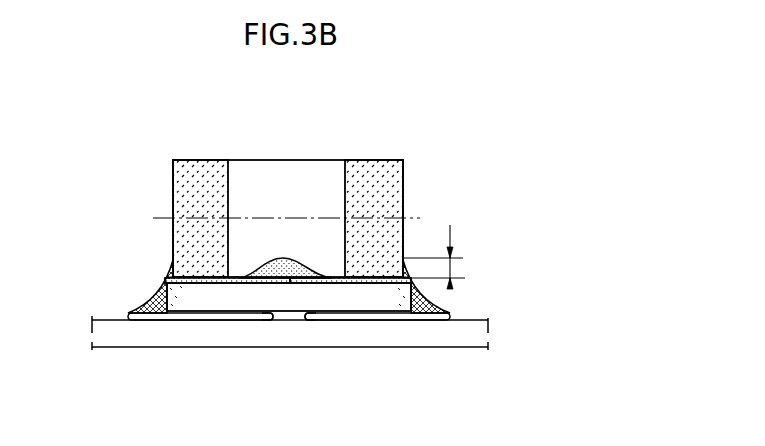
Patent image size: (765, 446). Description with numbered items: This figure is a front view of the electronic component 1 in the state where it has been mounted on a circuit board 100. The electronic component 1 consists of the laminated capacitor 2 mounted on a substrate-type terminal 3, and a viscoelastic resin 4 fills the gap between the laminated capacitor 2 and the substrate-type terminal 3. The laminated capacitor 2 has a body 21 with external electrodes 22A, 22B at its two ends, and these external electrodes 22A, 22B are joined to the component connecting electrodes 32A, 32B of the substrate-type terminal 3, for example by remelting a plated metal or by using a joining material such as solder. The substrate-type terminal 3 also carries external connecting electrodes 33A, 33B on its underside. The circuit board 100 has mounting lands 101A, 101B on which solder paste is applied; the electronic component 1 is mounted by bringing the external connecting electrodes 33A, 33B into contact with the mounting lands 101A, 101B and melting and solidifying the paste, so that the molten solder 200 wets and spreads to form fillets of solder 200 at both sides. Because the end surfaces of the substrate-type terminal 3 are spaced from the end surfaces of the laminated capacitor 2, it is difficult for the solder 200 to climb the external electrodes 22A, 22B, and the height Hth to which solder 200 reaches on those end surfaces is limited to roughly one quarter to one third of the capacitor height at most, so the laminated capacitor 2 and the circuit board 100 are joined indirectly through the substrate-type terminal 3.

The electronic component 1 is at (453, 83).
The laminated capacitor 2 is at (403, 160).
The component body 21 is at (275, 160).
The external electrode 22A is at (193, 160).
The external electrode 22B is at (367, 160).
The substrate-type terminal 3 is at (293, 311).
The component connecting electrode 32A is at (210, 283).
The component connecting electrode 32B is at (391, 283).
The external connecting electrode 33A is at (278, 320).
The external connecting electrode 33B is at (306, 320).
The viscoelastic resin 4 is at (253, 272).
The circuit board 100 is at (227, 347).
The mounting land 101A is at (200, 320).
The mounting land 101B is at (385, 320).
The solder 200 is at (152, 304).
The height of solder Hth is at (450, 257).